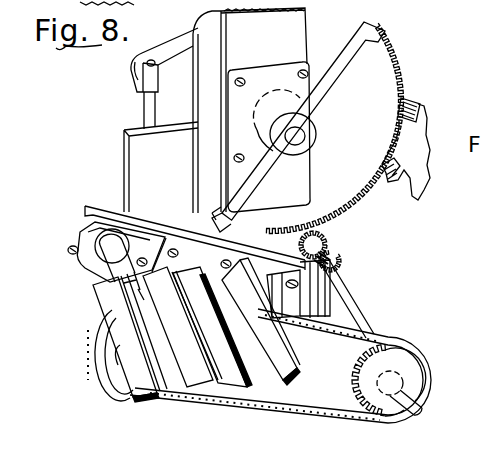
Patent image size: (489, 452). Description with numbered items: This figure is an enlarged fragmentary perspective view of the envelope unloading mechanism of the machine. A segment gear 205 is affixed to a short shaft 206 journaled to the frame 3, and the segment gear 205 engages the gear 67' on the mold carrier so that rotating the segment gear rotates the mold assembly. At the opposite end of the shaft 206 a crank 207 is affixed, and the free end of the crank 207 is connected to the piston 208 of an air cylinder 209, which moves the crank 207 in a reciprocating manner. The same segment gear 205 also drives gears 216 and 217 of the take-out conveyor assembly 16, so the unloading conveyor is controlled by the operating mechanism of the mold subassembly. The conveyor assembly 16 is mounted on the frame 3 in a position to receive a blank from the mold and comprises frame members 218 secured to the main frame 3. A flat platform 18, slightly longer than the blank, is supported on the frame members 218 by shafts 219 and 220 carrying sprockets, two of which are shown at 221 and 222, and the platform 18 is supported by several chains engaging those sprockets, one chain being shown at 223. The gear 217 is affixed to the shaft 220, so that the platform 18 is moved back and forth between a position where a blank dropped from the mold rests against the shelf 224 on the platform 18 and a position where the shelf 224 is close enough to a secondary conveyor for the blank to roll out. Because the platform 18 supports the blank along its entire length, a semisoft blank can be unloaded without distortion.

The frame 3 is at (300, 25).
The crank 207 is at (165, 46).
The piston 208 is at (142, 99).
The air cylinder 209 is at (122, 163).
The short shaft 206 is at (300, 130).
The segment gear 205 is at (394, 48).
The gear 67' is at (422, 145).
The frame members 218 is at (118, 206).
The shaft 219 is at (103, 276).
The gear 216 is at (314, 240).
The gear 217 is at (332, 258).
The take-out conveyor assembly 16 is at (379, 290).
The shaft 220 is at (348, 312).
The chain 223 is at (388, 334).
The shelf 224 is at (290, 342).
The sprocket 222 is at (426, 362).
The sprocket 221 is at (88, 350).
The flat platform 18 is at (140, 398).